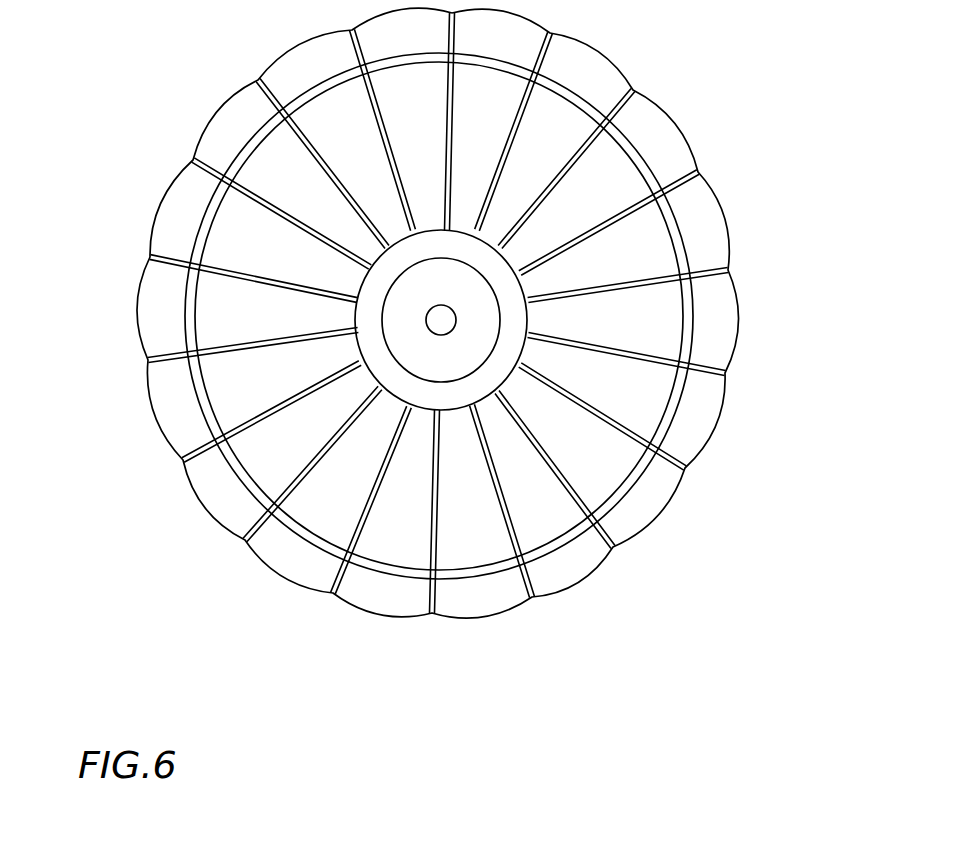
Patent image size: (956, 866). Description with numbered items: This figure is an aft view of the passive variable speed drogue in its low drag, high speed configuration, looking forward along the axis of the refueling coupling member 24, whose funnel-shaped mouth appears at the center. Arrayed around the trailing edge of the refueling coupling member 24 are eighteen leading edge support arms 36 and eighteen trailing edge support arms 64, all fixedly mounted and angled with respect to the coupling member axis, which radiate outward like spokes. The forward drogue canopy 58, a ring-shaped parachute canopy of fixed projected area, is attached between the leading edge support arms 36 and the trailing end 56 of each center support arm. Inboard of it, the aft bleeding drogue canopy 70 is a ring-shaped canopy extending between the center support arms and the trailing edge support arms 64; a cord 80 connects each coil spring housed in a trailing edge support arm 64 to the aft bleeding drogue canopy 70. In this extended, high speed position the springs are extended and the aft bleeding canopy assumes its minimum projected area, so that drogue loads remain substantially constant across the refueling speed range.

The refueling coupling member 24 is at (470, 324).
The leading edge support arms 36 is at (602, 535).
The trailing end of center support arm 56 is at (503, 510).
The forward drogue canopy 58 is at (724, 322).
The trailing edge support arms 64 is at (393, 460).
The aft bleeding drogue canopy 70 is at (667, 417).
The cord 80 is at (220, 269).